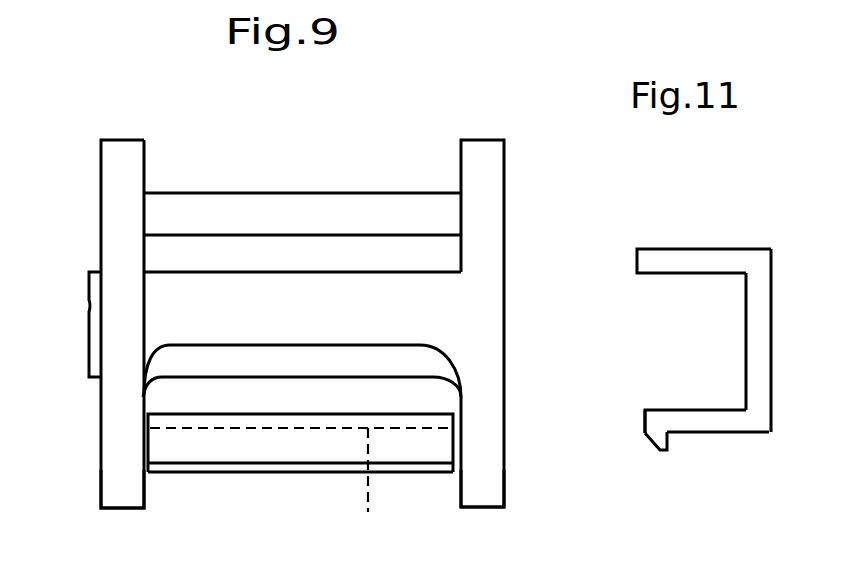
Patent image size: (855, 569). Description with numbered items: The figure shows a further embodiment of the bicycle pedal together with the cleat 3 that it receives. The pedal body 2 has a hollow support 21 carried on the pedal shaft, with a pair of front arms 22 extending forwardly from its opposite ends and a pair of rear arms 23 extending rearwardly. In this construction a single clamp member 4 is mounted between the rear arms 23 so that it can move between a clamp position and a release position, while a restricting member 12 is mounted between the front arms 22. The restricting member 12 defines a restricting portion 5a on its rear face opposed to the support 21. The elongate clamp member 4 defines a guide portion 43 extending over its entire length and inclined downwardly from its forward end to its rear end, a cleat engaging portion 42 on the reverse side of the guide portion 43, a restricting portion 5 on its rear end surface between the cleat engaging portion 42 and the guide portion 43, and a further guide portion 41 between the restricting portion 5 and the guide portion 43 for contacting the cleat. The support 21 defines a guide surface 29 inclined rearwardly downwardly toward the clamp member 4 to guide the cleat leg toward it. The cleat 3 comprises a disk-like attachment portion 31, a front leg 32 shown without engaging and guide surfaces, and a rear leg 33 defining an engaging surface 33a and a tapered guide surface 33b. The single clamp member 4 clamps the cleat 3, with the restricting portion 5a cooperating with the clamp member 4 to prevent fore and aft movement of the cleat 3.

In FIG. 9, the pedal body 2 is at (303, 323).
In FIG. 9, the front arms 22 is at (104, 175).
In FIG. 9, the rear arms 23 is at (107, 477).
In FIG. 9, the restricting member 12 is at (248, 200).
In FIG. 9, the hollow support 21 is at (257, 285).
In FIG. 9, the restricting portion 5a is at (340, 240).
In FIG. 9, the guide surface 29 is at (162, 357).
In FIG. 9, the clamp member 4 is at (300, 475).
In FIG. 9, the guide portion 41 is at (280, 412).
In FIG. 9, the cleat engaging portion 42 is at (367, 488).
In FIG. 9, the guide portion 43 is at (220, 447).
In FIG. 9, the restricting portion 5 is at (320, 400).
In FIG. 11, the cleat 3 is at (705, 363).
In FIG. 11, the attachment portion 31 is at (765, 345).
In FIG. 11, the front leg 32 is at (693, 257).
In FIG. 11, the rear leg 33 is at (722, 428).
In FIG. 11, the engaging surface 33a is at (670, 443).
In FIG. 11, the guide surface 33b is at (647, 435).